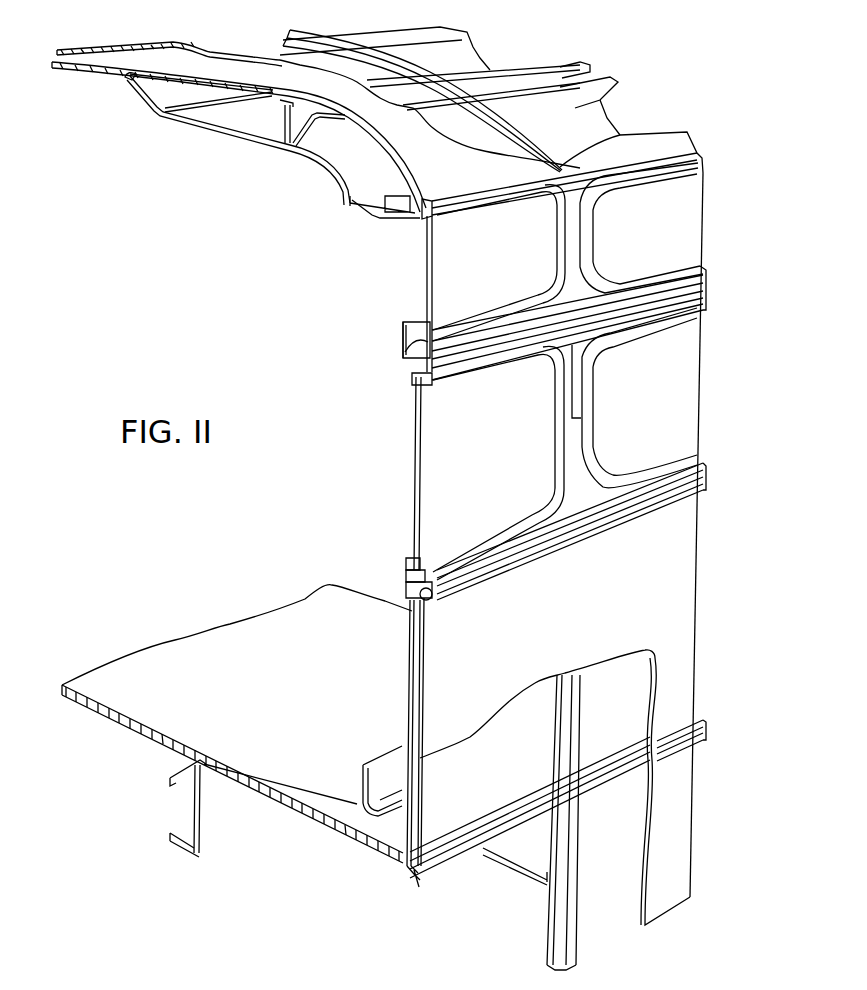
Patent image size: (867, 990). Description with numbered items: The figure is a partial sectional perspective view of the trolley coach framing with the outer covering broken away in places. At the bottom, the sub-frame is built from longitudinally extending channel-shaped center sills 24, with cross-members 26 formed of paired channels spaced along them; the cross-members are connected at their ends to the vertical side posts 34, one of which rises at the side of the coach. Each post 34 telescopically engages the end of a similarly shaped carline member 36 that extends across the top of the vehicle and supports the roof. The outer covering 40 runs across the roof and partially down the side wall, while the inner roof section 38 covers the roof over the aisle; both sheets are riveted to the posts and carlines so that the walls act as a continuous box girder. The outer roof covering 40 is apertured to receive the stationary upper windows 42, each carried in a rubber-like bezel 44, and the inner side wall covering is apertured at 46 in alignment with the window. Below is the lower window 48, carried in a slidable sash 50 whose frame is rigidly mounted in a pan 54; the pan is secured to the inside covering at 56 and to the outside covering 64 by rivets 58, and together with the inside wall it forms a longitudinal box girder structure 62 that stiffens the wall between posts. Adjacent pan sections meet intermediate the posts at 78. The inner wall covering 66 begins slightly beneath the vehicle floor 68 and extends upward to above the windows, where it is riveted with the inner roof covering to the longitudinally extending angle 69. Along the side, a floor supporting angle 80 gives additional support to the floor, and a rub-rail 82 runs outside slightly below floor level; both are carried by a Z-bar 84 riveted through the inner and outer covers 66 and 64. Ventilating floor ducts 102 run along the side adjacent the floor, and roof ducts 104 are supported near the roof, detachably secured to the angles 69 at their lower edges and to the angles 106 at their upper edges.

The center sill 24 is at (232, 827).
The cross-member 26 is at (537, 852).
The side post 34 is at (570, 910).
The carline member 36 is at (553, 143).
The inner roof section 38 is at (72, 67).
The outer roof covering 40 is at (458, 172).
The window 42 is at (499, 277).
The bezel 44 is at (423, 219).
The aperture 46 is at (413, 321).
The lower window 48 is at (492, 473).
The sash 50 is at (417, 378).
The pan 54 is at (407, 577).
The attachment to inside covering 56 is at (408, 560).
The rivets 58 is at (433, 598).
The box girder structure 62 is at (413, 583).
The outside covering 64 is at (581, 625).
The inner wall covering 66 is at (409, 681).
The vehicle floor 68 is at (311, 682).
The longitudinally extending angle 69 is at (390, 211).
The pan joint 78 is at (706, 483).
The floor supporting angle 80 is at (400, 858).
The rub-rail 82 is at (688, 745).
The Z-bar 84 is at (460, 855).
The floor duct 102 is at (368, 781).
The roof duct 104 is at (342, 162).
The angle 106 is at (137, 83).